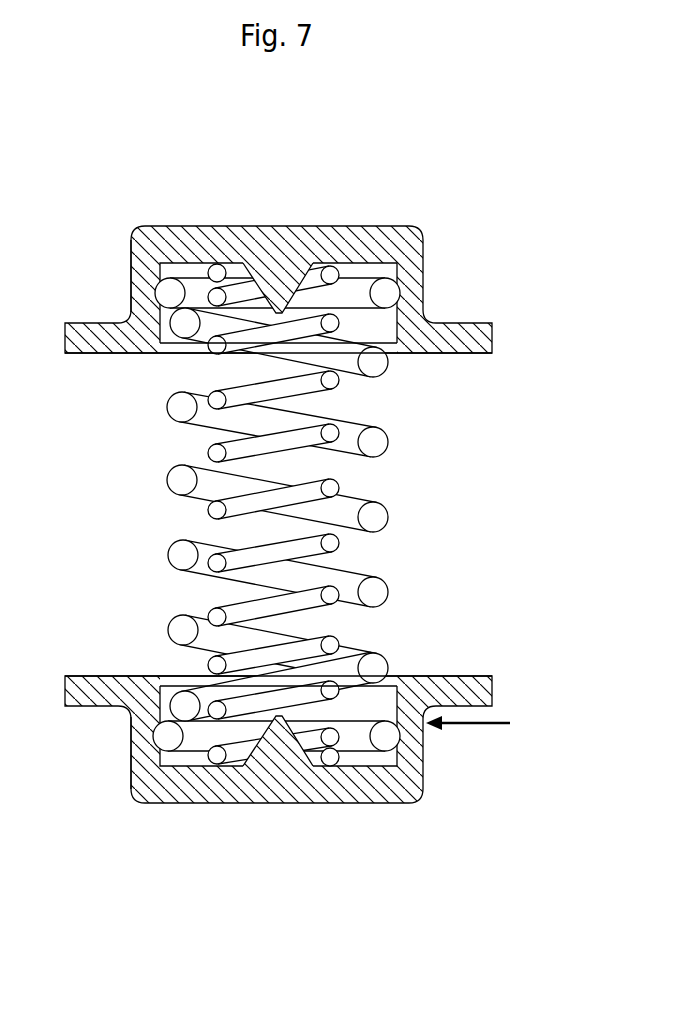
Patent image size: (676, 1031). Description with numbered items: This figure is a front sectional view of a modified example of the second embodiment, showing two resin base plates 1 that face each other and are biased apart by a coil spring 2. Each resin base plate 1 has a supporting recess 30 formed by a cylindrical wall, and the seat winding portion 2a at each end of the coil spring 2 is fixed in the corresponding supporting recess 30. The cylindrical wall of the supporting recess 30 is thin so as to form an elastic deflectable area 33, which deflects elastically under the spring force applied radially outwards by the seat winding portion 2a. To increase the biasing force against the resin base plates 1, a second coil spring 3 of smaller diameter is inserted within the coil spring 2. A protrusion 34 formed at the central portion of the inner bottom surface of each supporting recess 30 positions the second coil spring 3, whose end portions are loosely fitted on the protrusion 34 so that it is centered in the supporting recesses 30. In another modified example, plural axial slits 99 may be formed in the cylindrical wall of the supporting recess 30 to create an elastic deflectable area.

The resin base plate 1 is at (260, 512).
The coil spring 2 is at (300, 516).
The seat winding portion 2a is at (186, 282).
The second coil spring 3 is at (347, 390).
The supporting recess 30 is at (354, 226).
The elastic deflectable area 33 is at (131, 292).
The protrusion 34 is at (259, 290).
The axial slits 99 is at (486, 727).